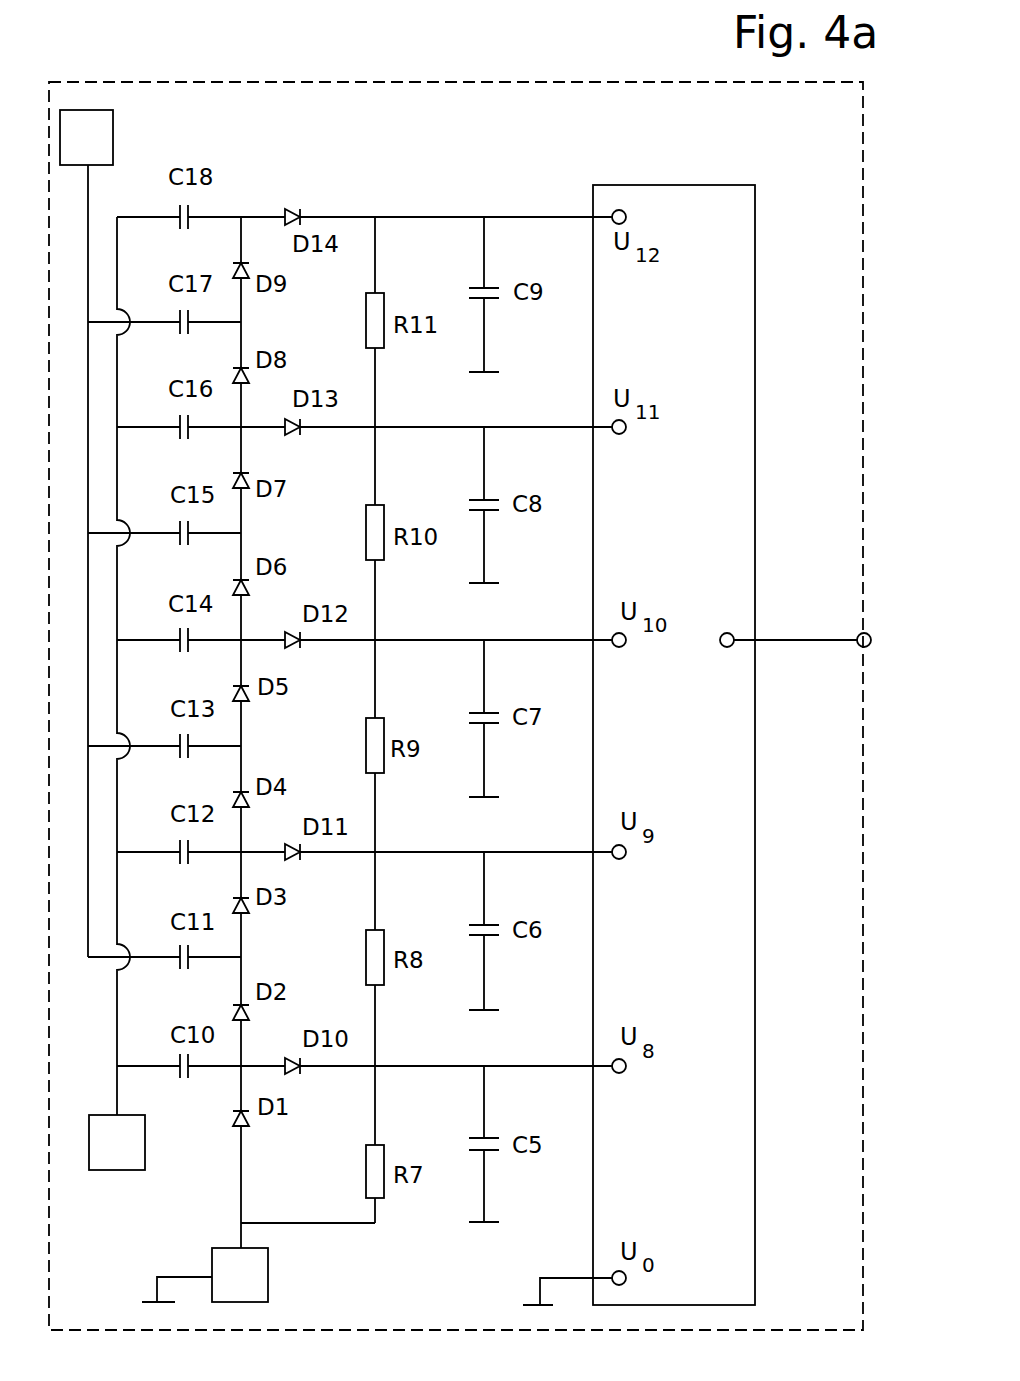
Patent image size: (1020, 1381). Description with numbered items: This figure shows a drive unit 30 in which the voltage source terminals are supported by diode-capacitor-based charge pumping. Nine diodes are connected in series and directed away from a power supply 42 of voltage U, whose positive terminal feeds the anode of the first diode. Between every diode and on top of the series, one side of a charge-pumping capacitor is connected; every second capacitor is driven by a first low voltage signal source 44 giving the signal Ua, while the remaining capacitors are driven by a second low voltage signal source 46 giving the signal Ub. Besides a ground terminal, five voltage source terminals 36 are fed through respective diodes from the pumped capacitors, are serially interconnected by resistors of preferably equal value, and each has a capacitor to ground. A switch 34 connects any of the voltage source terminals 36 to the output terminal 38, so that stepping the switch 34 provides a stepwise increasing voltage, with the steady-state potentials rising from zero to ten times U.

The drive unit 30 is at (592, 96).
The switch 34 is at (740, 507).
The voltage source terminals 36 is at (618, 208).
The output terminal 38 is at (866, 648).
The power supply 42 is at (262, 1293).
The first low voltage signal source 44 is at (137, 1150).
The second low voltage signal source 46 is at (113, 128).